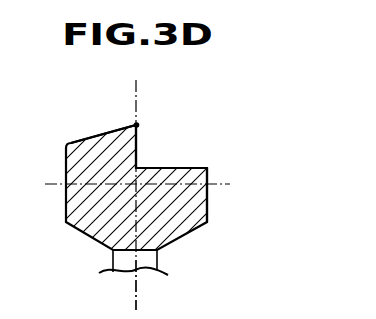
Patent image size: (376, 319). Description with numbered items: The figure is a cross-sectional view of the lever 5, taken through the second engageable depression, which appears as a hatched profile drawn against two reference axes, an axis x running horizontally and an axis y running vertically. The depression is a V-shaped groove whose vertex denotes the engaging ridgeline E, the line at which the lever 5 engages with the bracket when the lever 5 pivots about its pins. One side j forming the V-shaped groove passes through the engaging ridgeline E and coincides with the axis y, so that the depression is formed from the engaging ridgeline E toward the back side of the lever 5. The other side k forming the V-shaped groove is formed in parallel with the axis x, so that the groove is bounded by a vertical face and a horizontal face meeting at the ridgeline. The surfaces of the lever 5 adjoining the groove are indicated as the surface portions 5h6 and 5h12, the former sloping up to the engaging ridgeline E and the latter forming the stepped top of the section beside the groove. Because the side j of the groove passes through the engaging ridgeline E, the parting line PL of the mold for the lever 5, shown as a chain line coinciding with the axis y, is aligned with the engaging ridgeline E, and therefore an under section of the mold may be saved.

The lever 5 is at (80, 201).
The engageable depression surface 5h6 is at (90, 136).
The engageable depression surface 5h12 is at (172, 169).
The engaging ridgeline E is at (136, 125).
The one side of the V-shaped groove j is at (140, 143).
The other side of the V-shaped groove k is at (198, 169).
The axis x is at (145, 184).
The axis y is at (135, 184).
The parting line PL is at (139, 289).